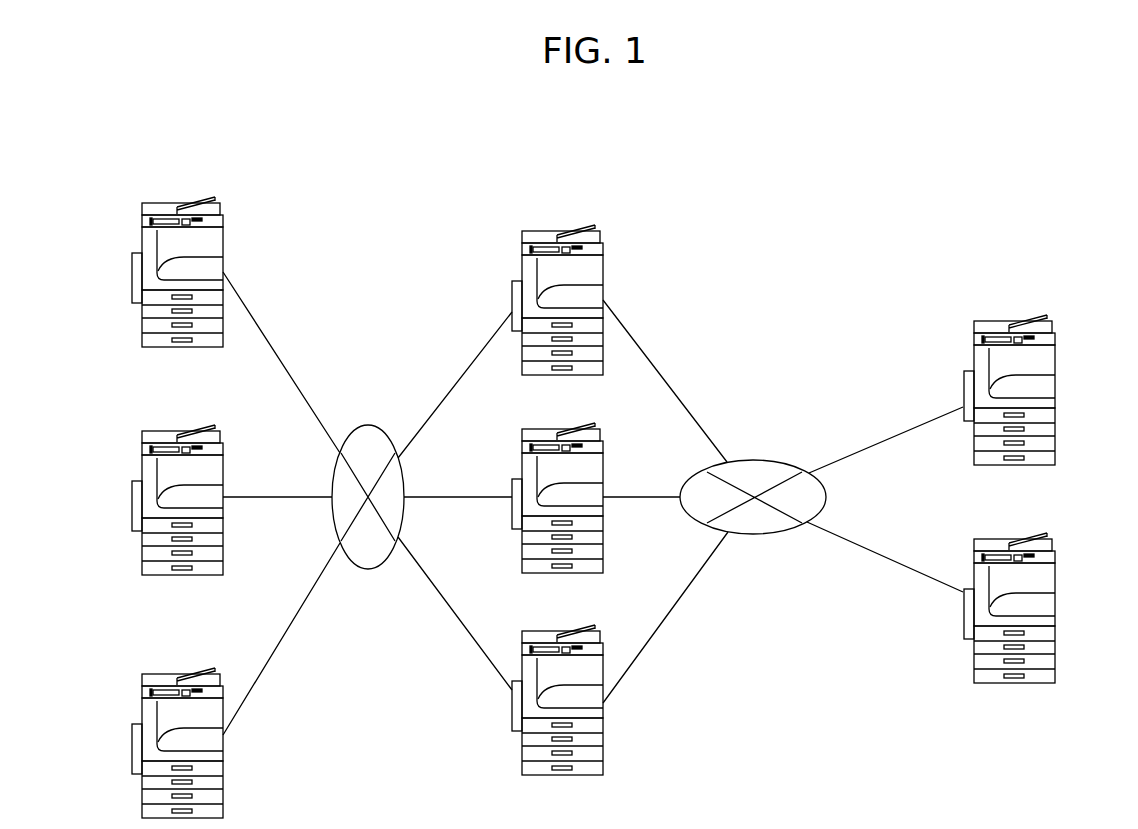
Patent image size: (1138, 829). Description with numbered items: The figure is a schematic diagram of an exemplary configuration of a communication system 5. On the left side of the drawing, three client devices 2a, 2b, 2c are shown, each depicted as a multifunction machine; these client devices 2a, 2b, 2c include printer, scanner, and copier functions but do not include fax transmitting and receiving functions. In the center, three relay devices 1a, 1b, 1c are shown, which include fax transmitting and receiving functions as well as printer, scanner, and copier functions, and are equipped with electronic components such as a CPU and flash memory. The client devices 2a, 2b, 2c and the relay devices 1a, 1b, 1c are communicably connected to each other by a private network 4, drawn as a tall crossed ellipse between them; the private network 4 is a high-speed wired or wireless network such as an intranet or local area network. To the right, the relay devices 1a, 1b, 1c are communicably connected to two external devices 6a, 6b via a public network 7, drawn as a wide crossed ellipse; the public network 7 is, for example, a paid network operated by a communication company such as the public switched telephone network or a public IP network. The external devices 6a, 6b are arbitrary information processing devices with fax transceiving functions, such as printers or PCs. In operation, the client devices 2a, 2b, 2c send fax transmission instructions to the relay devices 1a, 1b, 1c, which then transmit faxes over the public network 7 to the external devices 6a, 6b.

The relay device 1a is at (592, 235).
The relay device 1b is at (603, 463).
The relay device 1c is at (594, 625).
The client device 2a is at (132, 272).
The client device 2b is at (132, 500).
The client device 2c is at (132, 746).
The private network 4 is at (368, 425).
The communication system 5 is at (1098, 212).
The external device 6a is at (1055, 362).
The external device 6b is at (1055, 580).
The public network 7 is at (753, 460).